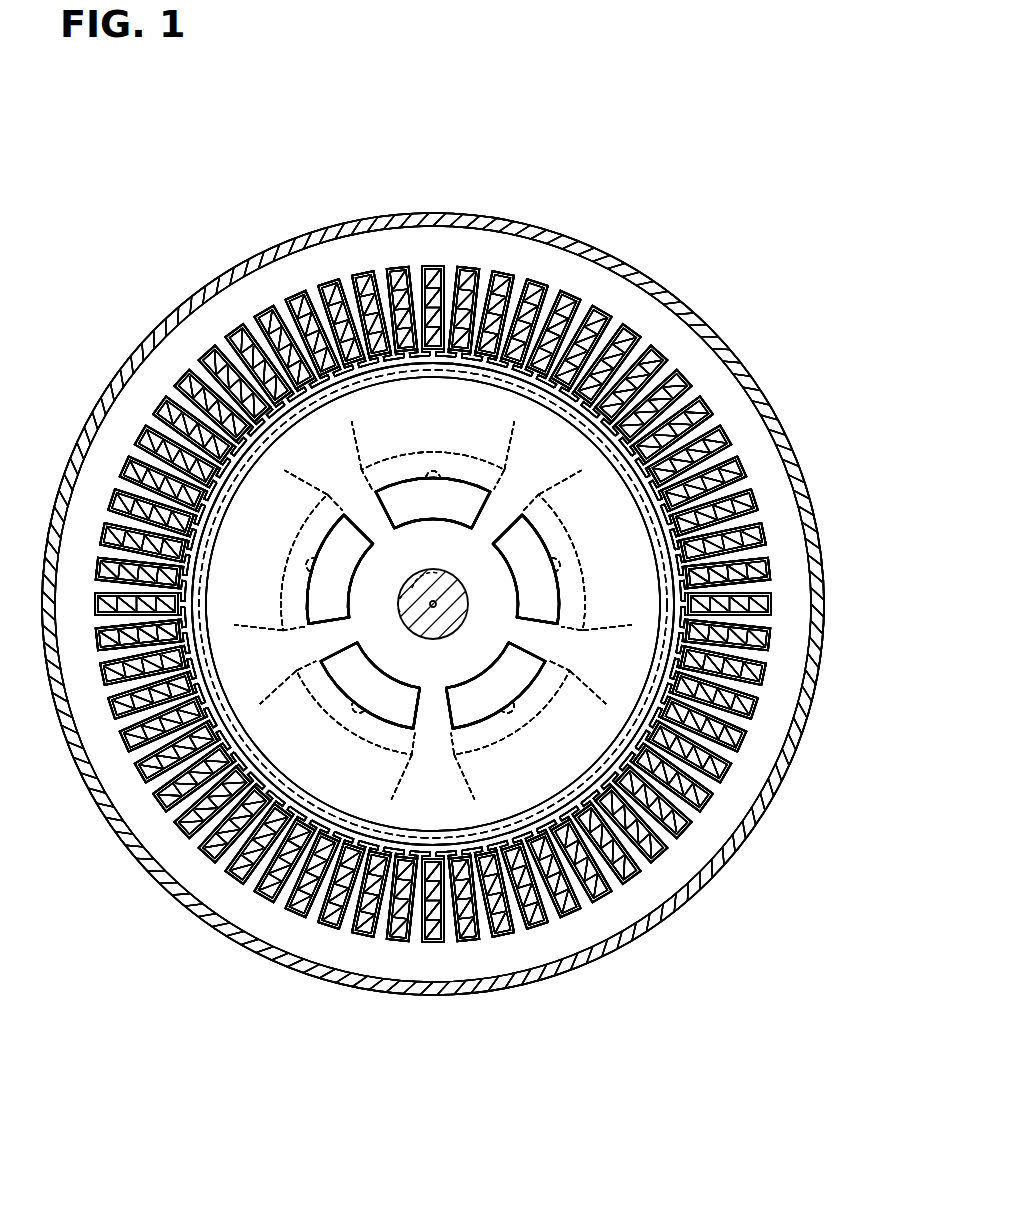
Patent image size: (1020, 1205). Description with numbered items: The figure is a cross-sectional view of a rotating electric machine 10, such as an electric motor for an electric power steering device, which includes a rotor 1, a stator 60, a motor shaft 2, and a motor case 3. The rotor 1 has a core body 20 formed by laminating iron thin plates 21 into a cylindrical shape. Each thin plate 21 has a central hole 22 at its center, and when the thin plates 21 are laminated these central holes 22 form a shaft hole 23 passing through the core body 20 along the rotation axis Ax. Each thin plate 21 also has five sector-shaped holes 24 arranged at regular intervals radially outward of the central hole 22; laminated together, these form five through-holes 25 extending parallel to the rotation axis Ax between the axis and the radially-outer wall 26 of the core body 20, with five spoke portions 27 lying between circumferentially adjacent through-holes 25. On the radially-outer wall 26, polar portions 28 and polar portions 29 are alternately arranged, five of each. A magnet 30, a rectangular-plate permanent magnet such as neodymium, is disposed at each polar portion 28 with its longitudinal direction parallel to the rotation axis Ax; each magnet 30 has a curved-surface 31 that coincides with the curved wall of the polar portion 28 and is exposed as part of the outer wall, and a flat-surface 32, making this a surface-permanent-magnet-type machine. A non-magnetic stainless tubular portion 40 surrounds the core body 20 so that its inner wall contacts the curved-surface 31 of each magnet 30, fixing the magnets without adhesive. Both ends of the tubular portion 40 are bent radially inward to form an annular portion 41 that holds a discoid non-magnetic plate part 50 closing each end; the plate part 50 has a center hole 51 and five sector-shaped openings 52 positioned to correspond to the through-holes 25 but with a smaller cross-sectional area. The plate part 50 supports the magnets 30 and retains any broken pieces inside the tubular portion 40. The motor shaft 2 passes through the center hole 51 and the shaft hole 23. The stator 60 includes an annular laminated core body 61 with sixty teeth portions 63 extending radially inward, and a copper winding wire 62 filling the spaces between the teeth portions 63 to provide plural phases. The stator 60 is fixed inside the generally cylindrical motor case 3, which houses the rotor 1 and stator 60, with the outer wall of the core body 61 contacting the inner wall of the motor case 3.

The rotor 1 is at (527, 368).
The motor shaft 2 is at (468, 622).
The motor case 3 is at (745, 812).
The rotating electric machine 10 is at (485, 107).
The core body 20 is at (361, 420).
The thin plate 21 is at (335, 427).
The central hole 22 is at (438, 569).
The shaft hole 23 is at (410, 588).
The sector-shaped hole 24 is at (388, 460).
The through-hole 25 is at (414, 452).
The radially-outer wall 26 is at (243, 352).
The spoke portion 27 is at (363, 507).
The polar portion 28 is at (422, 345).
The polar portion 29 is at (212, 320).
The magnet 30 is at (450, 345).
The curved-surface 31 is at (473, 355).
The flat-surface 32 is at (470, 480).
The tubular portion 40 is at (660, 520).
The annular portion 41 is at (630, 490).
The plate part 50 is at (258, 697).
The center hole 51 is at (402, 621).
The opening 52 is at (440, 477).
The stator 60 is at (300, 1002).
The core body 61 is at (343, 958).
The winding wire 62 is at (372, 935).
The teeth portion 63 is at (383, 920).
The rotation axis Ax is at (470, 607).